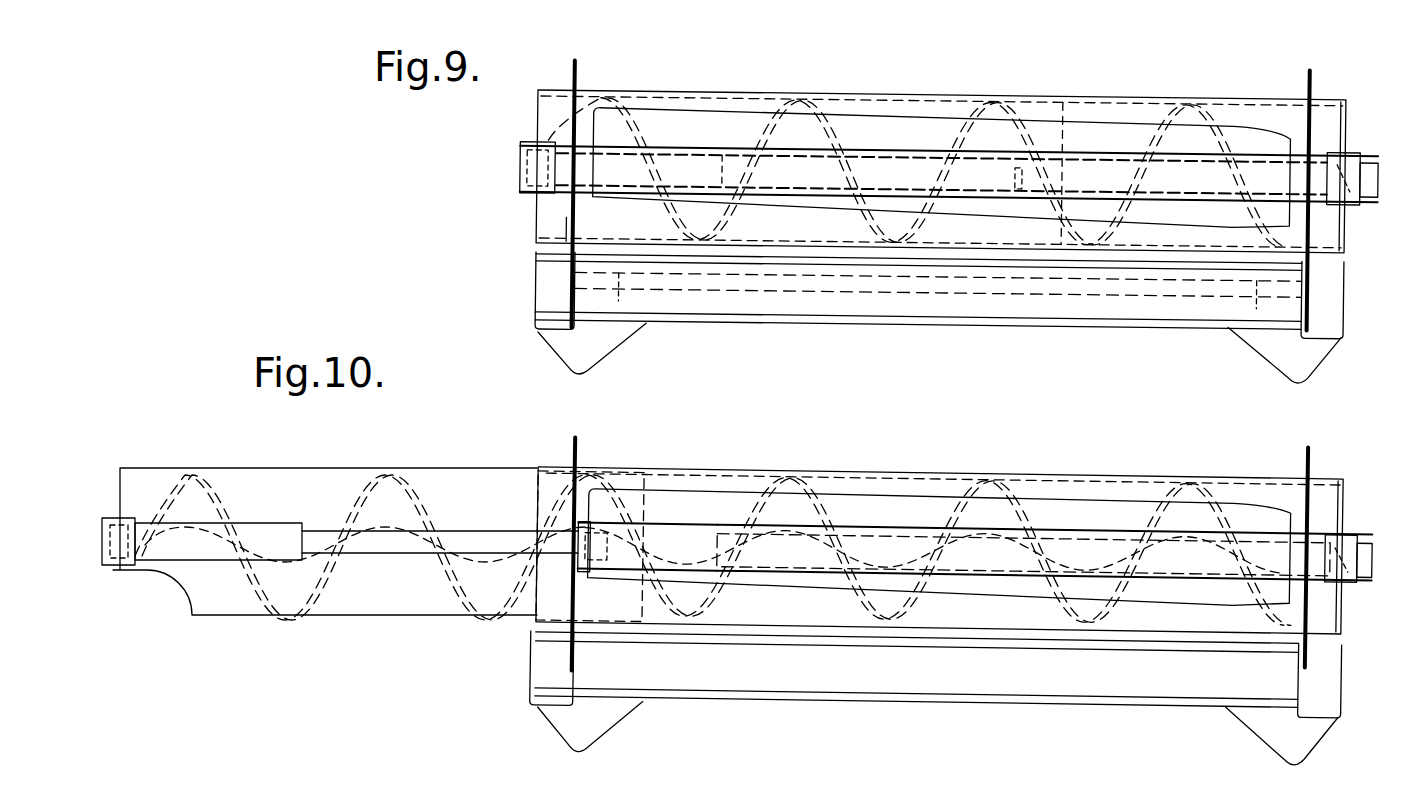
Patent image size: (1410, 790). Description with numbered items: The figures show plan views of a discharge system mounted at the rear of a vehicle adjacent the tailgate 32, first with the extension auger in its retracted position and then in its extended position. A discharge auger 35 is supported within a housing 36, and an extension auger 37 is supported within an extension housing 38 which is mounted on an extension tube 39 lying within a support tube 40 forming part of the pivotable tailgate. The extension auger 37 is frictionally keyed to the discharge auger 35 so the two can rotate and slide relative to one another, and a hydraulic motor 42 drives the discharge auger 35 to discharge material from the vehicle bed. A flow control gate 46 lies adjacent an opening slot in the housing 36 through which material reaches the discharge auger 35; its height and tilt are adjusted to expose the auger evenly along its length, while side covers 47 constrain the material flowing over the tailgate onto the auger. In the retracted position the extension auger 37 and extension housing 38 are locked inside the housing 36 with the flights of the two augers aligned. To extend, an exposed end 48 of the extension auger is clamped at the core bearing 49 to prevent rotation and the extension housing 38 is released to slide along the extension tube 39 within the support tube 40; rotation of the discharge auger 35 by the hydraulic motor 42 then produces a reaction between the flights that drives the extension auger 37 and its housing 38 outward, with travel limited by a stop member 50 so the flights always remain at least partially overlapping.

In FIG. 9, the tailgate 32 is at (880, 298).
In FIG. 10, the tailgate 32 is at (890, 680).
In FIG. 9, the discharge auger 35 is at (1217, 115).
In FIG. 10, the discharge auger 35 is at (1167, 493).
In FIG. 9, the housing 36 is at (1143, 95).
In FIG. 10, the housing 36 is at (1065, 477).
In FIG. 9, the extension auger 37 is at (925, 255).
In FIG. 10, the extension auger 37 is at (252, 606).
In FIG. 9, the extension housing 38 is at (926, 98).
In FIG. 10, the extension housing 38 is at (326, 468).
In FIG. 10, the extension tube 39 is at (397, 545).
In FIG. 10, the support tube 40 is at (690, 527).
In FIG. 9, the hydraulic motor 42 is at (1352, 178).
In FIG. 10, the hydraulic motor 42 is at (1352, 553).
In FIG. 9, the flow control gate 46 is at (648, 110).
In FIG. 10, the flow control gate 46 is at (897, 512).
In FIG. 9, the side covers 47 is at (778, 218).
In FIG. 10, the side covers 47 is at (758, 592).
In FIG. 10, the exposed end 48 is at (178, 545).
In FIG. 9, the core bearing 49 is at (520, 158).
In FIG. 10, the core bearing 49 is at (112, 523).
In FIG. 10, the stop member 50 is at (625, 473).